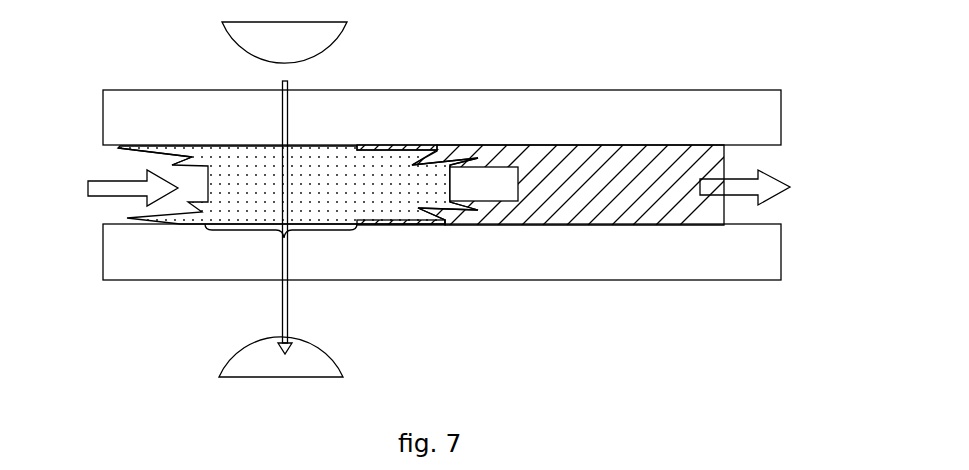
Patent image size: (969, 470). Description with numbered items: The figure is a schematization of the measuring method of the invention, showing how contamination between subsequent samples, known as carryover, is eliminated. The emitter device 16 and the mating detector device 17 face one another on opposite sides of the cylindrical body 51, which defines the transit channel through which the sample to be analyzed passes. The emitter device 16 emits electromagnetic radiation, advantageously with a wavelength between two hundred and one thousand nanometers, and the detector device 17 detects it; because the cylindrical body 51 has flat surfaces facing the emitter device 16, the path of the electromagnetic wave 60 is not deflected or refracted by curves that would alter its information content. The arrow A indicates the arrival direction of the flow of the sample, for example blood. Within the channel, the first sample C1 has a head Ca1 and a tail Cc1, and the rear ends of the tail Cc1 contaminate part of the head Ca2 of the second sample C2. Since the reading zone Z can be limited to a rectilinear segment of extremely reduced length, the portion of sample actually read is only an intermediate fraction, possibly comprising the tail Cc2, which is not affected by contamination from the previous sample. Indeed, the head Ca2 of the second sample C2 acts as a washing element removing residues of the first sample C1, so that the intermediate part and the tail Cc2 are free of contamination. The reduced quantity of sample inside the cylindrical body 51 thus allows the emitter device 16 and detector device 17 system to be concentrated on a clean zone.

The emitter device 16 is at (319, 43).
The detector device 17 is at (318, 358).
The path of the electromagnetic wave 60 is at (265, 97).
The cylindrical body 51 is at (708, 112).
The first sample C1 is at (580, 185).
The second sample C2 is at (253, 195).
The head of the first sample Ca1 is at (728, 165).
The tail of the first sample Cc1 is at (473, 215).
The head of the second sample Ca2 is at (437, 150).
The tail of the second sample Cc2 is at (163, 150).
The reading zone Z is at (313, 231).
The arrival direction of the flow of the sample A is at (116, 188).